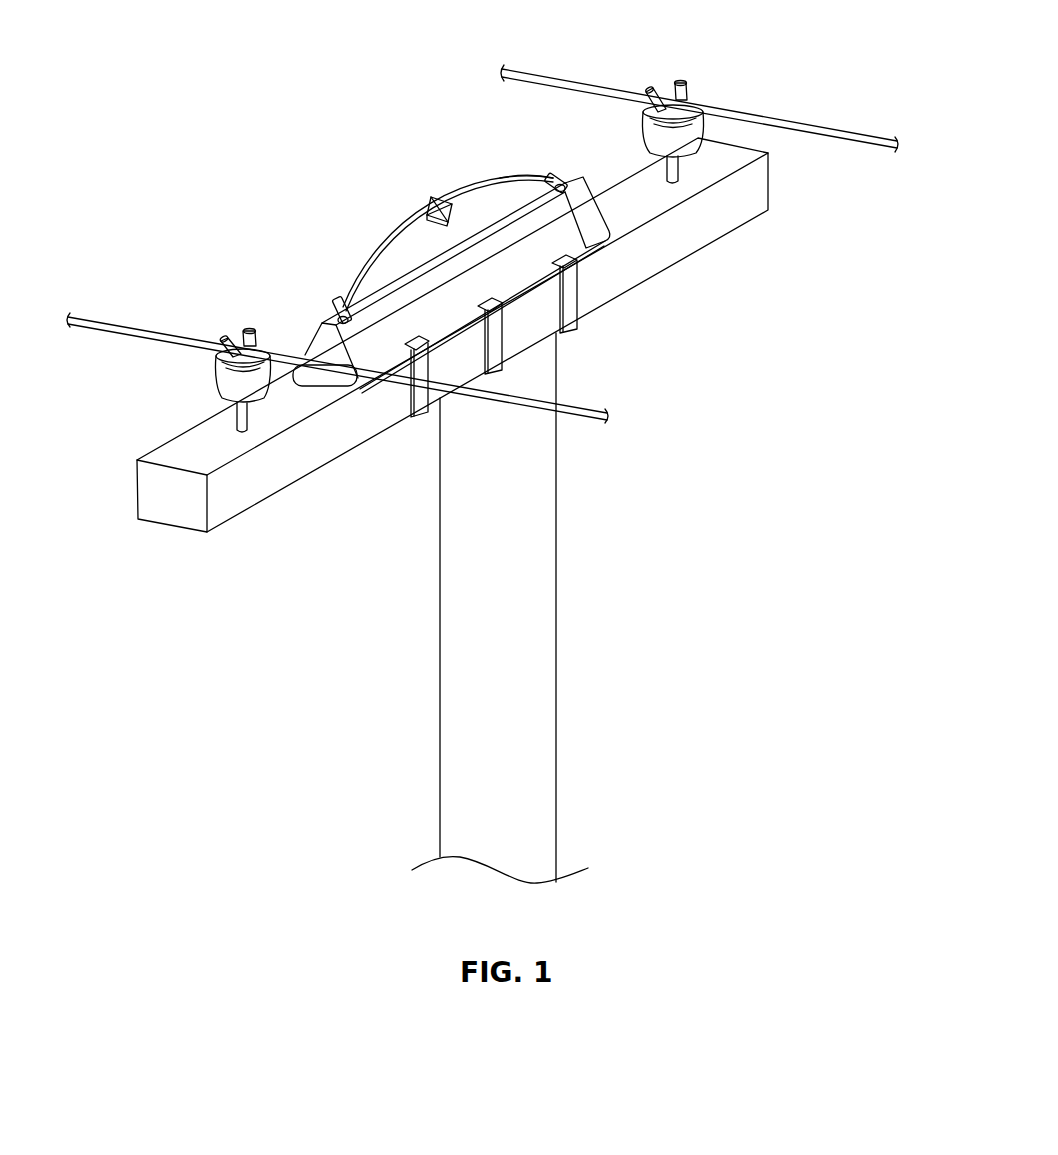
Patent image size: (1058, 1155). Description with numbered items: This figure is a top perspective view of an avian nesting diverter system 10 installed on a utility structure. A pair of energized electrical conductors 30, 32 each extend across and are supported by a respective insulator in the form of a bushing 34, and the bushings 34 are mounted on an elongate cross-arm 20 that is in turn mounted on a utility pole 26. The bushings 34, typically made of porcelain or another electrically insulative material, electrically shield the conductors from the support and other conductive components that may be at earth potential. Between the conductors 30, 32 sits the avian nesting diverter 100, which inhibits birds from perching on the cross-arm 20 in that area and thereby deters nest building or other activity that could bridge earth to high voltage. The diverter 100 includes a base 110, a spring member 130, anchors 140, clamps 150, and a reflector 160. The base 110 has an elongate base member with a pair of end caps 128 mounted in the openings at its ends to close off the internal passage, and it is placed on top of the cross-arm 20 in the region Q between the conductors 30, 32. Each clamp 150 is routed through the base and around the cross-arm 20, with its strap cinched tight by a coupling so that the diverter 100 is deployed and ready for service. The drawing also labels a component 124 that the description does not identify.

The avian nesting diverter system 10 is at (314, 127).
The cross-arm 20 is at (277, 472).
The utility pole 26 is at (548, 634).
The electrical conductor 30 is at (147, 330).
The electrical conductor 32 is at (511, 72).
The bushing 34 is at (222, 384).
The avian nesting diverter 100 is at (363, 201).
The base 110 is at (587, 240).
The lanyard 124 is at (510, 208).
The end cap 128 is at (333, 380).
The spring member 130 is at (541, 172).
The anchor 140 is at (338, 318).
The clamp 150 is at (572, 302).
The reflector 160 is at (438, 196).
The region Q is at (636, 184).